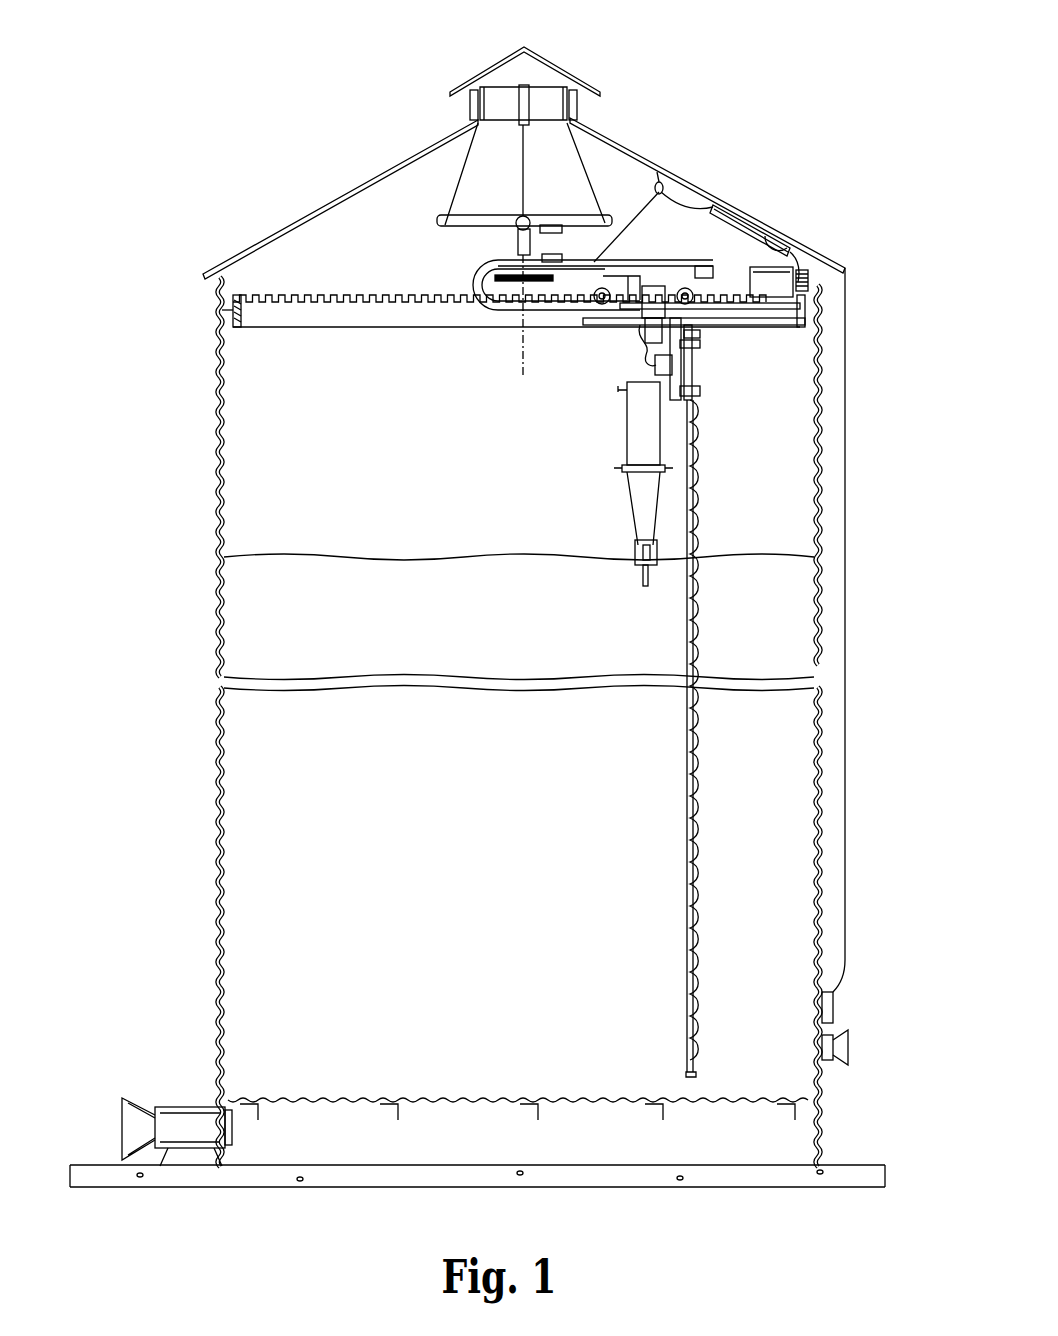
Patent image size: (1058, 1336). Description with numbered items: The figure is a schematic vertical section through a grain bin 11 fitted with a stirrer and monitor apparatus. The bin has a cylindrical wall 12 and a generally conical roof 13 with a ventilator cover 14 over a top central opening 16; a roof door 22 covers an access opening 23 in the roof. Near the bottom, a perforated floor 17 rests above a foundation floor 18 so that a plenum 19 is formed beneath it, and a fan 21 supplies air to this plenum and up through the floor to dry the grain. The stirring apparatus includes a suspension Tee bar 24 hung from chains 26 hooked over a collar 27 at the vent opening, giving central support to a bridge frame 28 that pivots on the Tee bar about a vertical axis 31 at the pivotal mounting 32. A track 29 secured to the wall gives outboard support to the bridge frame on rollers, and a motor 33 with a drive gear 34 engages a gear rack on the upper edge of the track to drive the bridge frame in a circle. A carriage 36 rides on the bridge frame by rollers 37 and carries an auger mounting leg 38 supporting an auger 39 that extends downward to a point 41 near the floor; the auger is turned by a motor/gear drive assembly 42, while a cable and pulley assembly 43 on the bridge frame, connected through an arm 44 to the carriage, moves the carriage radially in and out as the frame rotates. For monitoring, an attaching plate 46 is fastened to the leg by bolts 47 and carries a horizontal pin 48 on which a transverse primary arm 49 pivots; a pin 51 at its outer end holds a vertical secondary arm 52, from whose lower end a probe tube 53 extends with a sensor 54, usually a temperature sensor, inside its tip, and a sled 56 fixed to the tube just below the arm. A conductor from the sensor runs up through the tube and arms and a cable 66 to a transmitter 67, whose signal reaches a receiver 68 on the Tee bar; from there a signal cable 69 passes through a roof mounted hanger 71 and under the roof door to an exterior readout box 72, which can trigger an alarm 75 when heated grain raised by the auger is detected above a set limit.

The grain bin 11 is at (212, 773).
The cylindrical wall 12 is at (220, 806).
The conical roof 13 is at (355, 195).
The ventilator cover 14 is at (546, 72).
The top central opening 16 is at (545, 92).
The perforated floor 17 is at (517, 1116).
The foundation floor 18 is at (397, 1188).
The plenum 19 is at (497, 1165).
The fan 21 is at (173, 1107).
The roof door 22 is at (745, 223).
The access opening 23 is at (800, 268).
The suspension Tee bar 24 is at (487, 215).
The chains 26 is at (467, 170).
The collar 27 is at (470, 110).
The bridge frame 28 is at (567, 324).
The track 29 is at (268, 322).
The vertical axis 31 is at (521, 357).
The pivotal mounting 32 is at (516, 250).
The motor 33 is at (768, 267).
The drive gear 34 is at (806, 275).
The carriage 36 is at (700, 325).
The rollers 37 is at (602, 290).
The auger mounting leg 38 is at (681, 365).
The auger 39 is at (696, 476).
The point near the container floor 41 is at (696, 1077).
The motor/gear drive assembly 42 is at (650, 286).
The cable and pulley assembly 43 is at (600, 257).
The arm 44 is at (618, 276).
The attaching plate 46 is at (700, 388).
The bolts 47 is at (665, 400).
The pin 48 is at (618, 392).
The transverse arm 49 is at (627, 430).
The pin 51 is at (614, 468).
The vertical arm 52 is at (638, 510).
The probe tube 53 is at (643, 548).
The sensor 54 is at (643, 582).
The sled 56 is at (658, 548).
The cable 66 is at (626, 338).
The transmitter 67 is at (565, 254).
The receiver 68 is at (545, 225).
The signal cable 69 is at (646, 191).
The roof mounted hanger 71 is at (660, 176).
The readout box 72 is at (833, 1000).
The alarm 75 is at (840, 1062).